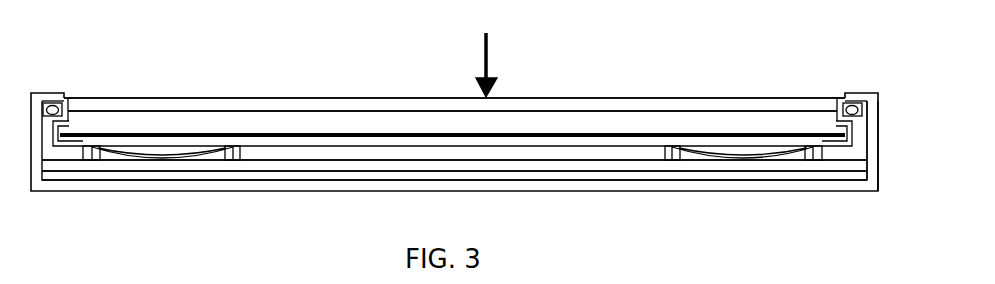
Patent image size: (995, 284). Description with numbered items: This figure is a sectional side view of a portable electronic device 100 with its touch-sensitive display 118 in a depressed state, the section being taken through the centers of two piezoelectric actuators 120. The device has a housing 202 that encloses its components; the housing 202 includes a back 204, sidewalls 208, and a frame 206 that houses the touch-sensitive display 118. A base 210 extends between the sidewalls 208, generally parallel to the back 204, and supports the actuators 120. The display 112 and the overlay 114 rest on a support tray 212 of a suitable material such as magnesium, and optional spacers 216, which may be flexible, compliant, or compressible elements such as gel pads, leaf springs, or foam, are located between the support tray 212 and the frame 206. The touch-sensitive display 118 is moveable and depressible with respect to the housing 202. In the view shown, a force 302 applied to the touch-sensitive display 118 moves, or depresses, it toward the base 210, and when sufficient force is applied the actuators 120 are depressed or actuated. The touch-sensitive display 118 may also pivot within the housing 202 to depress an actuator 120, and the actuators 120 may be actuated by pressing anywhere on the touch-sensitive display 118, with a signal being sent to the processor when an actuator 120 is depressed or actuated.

The portable electronic device 100 is at (871, 48).
The display 112 is at (318, 115).
The overlay 114 is at (393, 102).
The touch-sensitive display 118 is at (270, 97).
The piezoelectric actuator 120 is at (173, 150).
The housing 202 is at (638, 190).
The back 204 is at (568, 185).
The frame 206 is at (44, 93).
The sidewall 208 is at (872, 170).
The base 210 is at (480, 165).
The support tray 212 is at (413, 137).
The spacer 216 is at (852, 103).
The force 302 is at (488, 62).